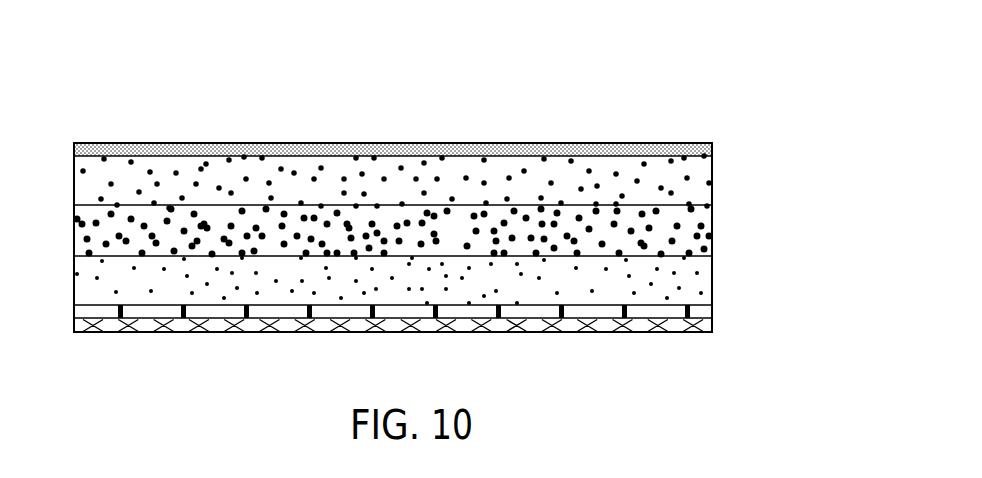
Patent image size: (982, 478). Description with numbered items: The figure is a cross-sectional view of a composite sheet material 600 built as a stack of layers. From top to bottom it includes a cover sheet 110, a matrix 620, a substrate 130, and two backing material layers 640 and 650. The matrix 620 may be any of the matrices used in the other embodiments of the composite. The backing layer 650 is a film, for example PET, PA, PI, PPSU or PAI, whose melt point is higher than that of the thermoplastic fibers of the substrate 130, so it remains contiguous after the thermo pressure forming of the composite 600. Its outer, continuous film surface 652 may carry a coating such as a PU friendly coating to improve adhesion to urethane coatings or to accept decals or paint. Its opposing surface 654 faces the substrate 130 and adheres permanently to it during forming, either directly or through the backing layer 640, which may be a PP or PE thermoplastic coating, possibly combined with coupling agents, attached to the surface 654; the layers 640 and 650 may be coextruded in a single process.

The composite sheet material 600 is at (80, 110).
The cover sheet 110 is at (724, 136).
The matrix 620 is at (723, 156).
The substrate 130 is at (727, 273).
The backing layer 640 is at (727, 308).
The backing layer 650 is at (733, 336).
The continuous film surface 652 is at (147, 333).
The opposing surface 654 is at (230, 333).